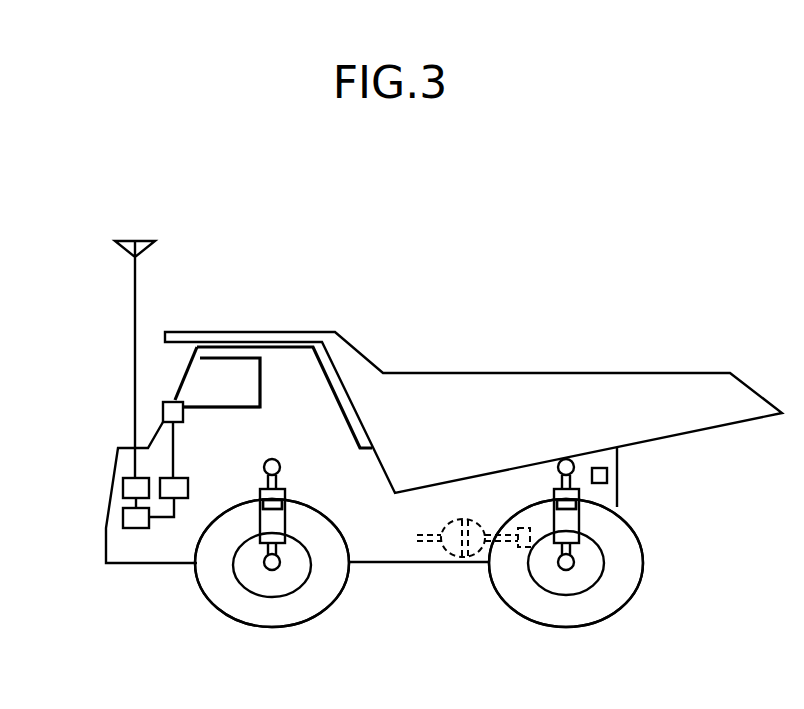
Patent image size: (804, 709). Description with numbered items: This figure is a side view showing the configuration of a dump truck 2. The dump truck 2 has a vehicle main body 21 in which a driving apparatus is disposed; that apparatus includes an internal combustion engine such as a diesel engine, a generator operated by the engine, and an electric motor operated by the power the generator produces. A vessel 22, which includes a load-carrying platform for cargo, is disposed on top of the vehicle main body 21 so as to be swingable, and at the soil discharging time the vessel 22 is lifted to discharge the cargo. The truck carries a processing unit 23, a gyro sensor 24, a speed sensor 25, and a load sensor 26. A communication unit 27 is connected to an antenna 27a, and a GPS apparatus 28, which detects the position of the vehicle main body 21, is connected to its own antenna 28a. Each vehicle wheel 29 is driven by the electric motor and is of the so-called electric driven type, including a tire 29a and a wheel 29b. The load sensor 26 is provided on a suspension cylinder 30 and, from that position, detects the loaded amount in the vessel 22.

The dump truck 2 is at (608, 209).
The vehicle main body 21 is at (618, 455).
The vessel 22 is at (450, 372).
The processing unit 23 is at (123, 517).
The gyro sensor 24 is at (607, 475).
The speed sensor 25 is at (522, 547).
The load sensor 26 is at (267, 461).
The communication unit 27 is at (123, 488).
The antenna 27a is at (143, 240).
The GPS apparatus 28 is at (183, 500).
The antenna 28a is at (163, 402).
The vehicle wheel 29 is at (280, 628).
The tire 29a is at (310, 605).
The wheel 29b is at (297, 567).
The suspension cylinder 30 is at (287, 523).